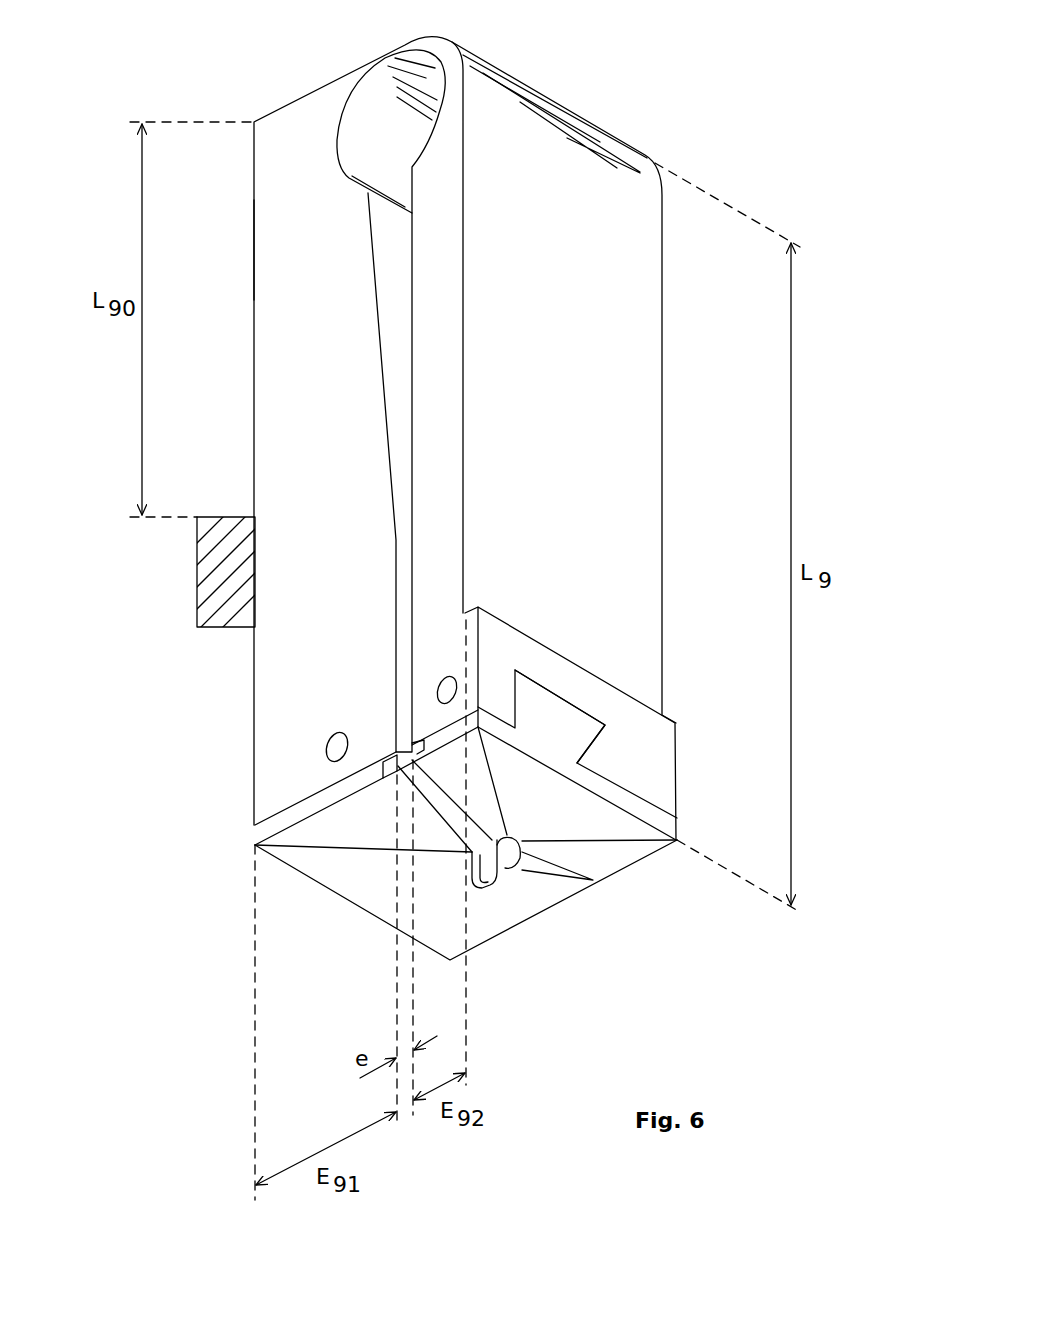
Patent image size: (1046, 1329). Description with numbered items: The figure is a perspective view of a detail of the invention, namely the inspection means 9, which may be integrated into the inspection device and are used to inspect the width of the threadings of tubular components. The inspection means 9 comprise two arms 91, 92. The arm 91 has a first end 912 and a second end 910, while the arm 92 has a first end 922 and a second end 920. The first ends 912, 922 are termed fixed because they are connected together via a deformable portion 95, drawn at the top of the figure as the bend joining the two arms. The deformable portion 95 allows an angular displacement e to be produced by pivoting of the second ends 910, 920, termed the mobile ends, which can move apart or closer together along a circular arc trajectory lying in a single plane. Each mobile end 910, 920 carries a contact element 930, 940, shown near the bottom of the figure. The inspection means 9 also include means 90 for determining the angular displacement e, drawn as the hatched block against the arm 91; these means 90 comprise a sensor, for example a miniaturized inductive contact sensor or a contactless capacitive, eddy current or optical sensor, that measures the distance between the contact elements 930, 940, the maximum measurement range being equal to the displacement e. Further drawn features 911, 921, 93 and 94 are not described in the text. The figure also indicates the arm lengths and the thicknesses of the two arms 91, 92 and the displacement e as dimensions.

The inspection means 9 is at (752, 186).
The means for determining the angular displacement 90 is at (220, 582).
The arm 91 is at (278, 492).
The second end 910 is at (270, 790).
The spot weld / hole on base 911 is at (328, 748).
The first end 912 is at (283, 250).
The arm 92 is at (595, 425).
The second end 920 is at (655, 770).
The hole on second plate 921 is at (453, 680).
The first end 922 is at (630, 162).
The triangular base 93 is at (370, 880).
The contact element 930 is at (476, 870).
The notch 94 is at (556, 748).
The contact element 940 is at (522, 862).
The deformable portion 95 is at (312, 110).